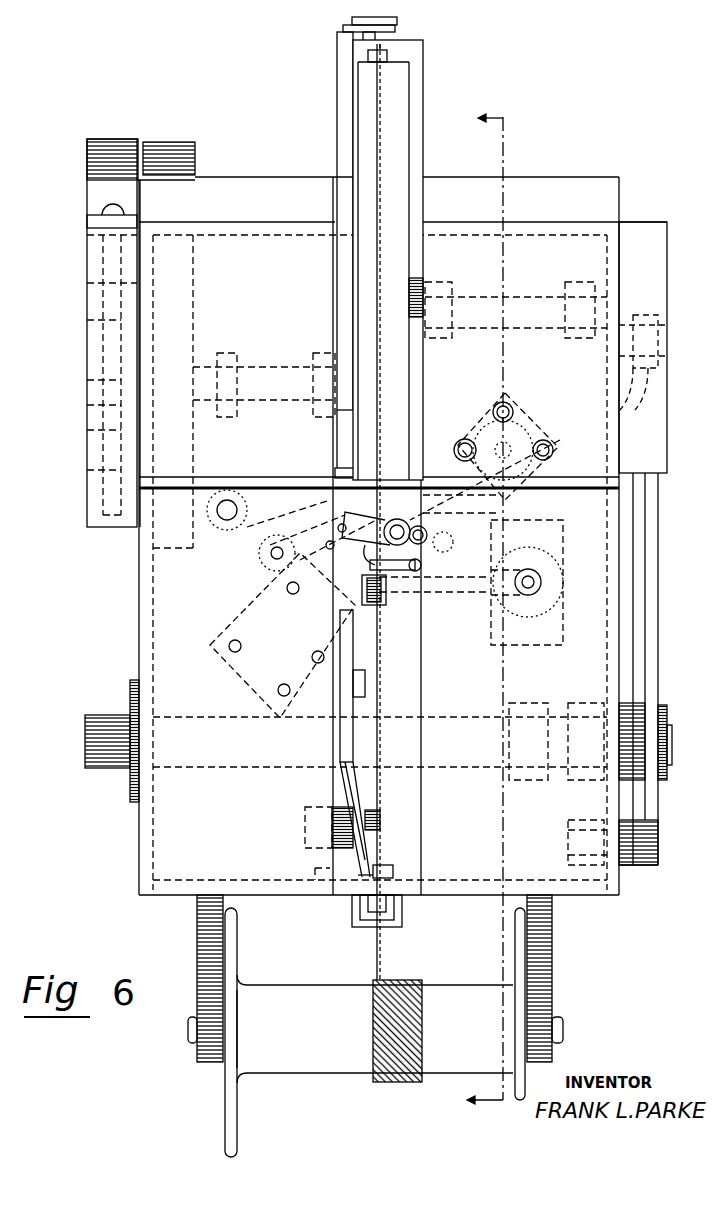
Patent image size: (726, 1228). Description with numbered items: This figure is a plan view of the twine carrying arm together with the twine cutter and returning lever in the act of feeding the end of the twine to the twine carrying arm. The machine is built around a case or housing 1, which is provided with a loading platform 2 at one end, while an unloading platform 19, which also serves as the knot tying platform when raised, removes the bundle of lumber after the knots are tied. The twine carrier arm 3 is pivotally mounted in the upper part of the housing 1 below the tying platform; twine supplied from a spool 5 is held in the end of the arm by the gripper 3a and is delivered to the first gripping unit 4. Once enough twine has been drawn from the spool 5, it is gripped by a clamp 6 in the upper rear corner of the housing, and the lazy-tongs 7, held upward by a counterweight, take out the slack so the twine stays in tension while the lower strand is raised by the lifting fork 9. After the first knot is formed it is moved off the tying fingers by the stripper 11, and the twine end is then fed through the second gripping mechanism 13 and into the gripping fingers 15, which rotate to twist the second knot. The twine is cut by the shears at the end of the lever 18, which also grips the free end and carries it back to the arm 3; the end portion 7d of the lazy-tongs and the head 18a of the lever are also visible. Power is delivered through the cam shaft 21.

The case or housing 1 is at (150, 640).
The loading platform 2 is at (88, 300).
The twine carrier arm 3 is at (415, 148).
The gripper 3a is at (418, 46).
The first gripping unit 4 is at (388, 585).
The spool 5 is at (300, 1000).
The clamp 6 is at (372, 860).
The lazy-tongs 7 is at (352, 668).
The lever end 7d is at (390, 872).
The lifting fork 9 is at (421, 565).
The stripper 11 is at (434, 480).
The second gripping mechanism 13 is at (380, 526).
The gripping fingers 15 is at (518, 438).
The lever 18 is at (340, 128).
The rod head 18a is at (398, 22).
The unloading platform 19 is at (662, 398).
The cam shaft 21 is at (112, 718).